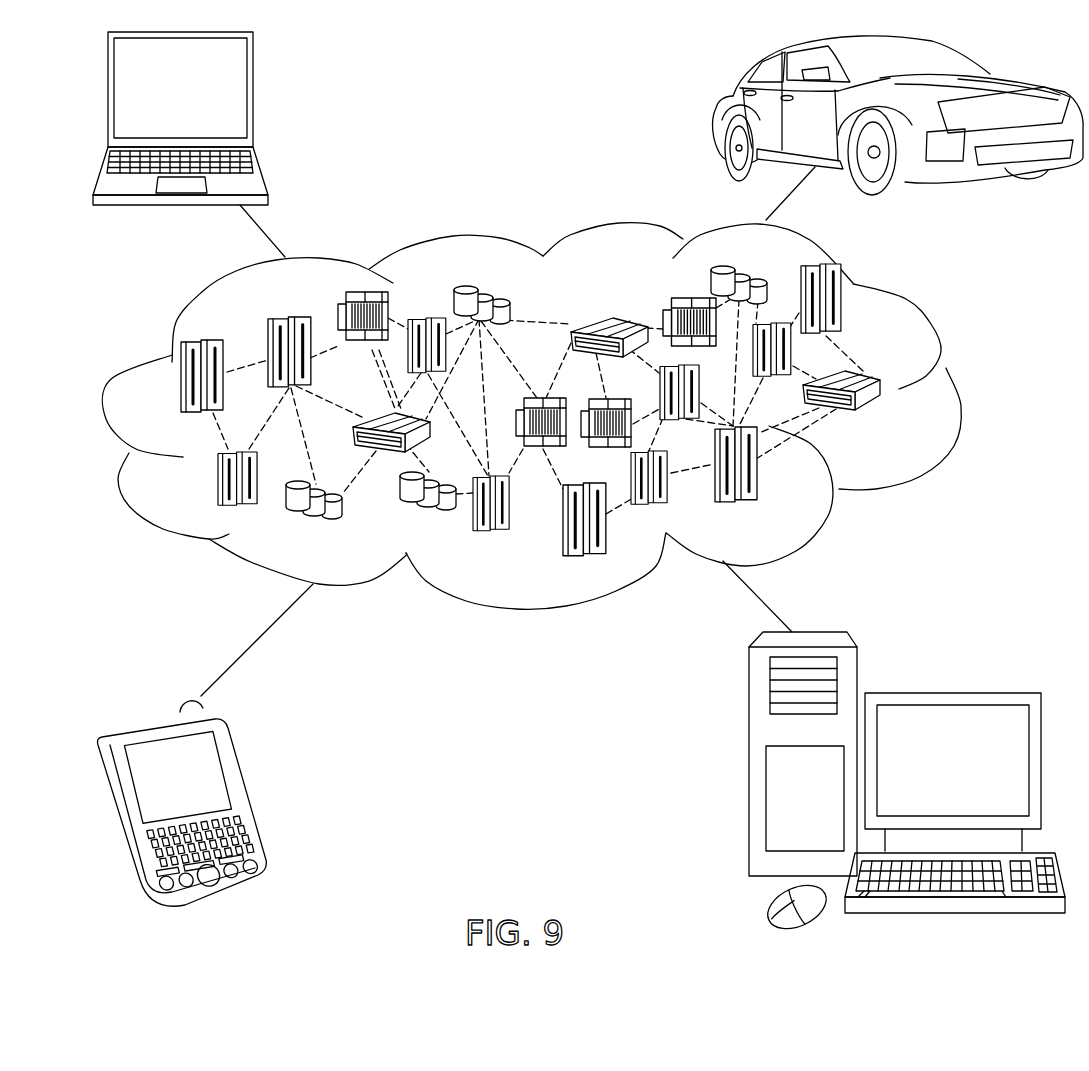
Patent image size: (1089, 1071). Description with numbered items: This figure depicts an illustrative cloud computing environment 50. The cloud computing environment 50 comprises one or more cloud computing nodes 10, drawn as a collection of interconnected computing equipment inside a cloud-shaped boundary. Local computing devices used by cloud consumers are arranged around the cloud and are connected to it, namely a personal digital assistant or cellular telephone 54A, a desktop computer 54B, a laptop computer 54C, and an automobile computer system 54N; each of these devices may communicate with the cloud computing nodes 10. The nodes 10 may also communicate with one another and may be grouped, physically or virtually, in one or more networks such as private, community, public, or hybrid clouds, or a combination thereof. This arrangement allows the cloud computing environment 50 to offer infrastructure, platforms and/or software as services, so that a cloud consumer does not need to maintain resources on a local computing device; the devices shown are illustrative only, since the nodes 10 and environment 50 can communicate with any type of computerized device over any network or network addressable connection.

The cloud computing node 10 is at (905, 423).
The cloud computing environment 50 is at (950, 383).
The personal digital assistant or cellular telephone 54A is at (244, 793).
The desktop computer 54B is at (948, 693).
The laptop computer 54C is at (254, 96).
The automobile computer system 54N is at (720, 114).